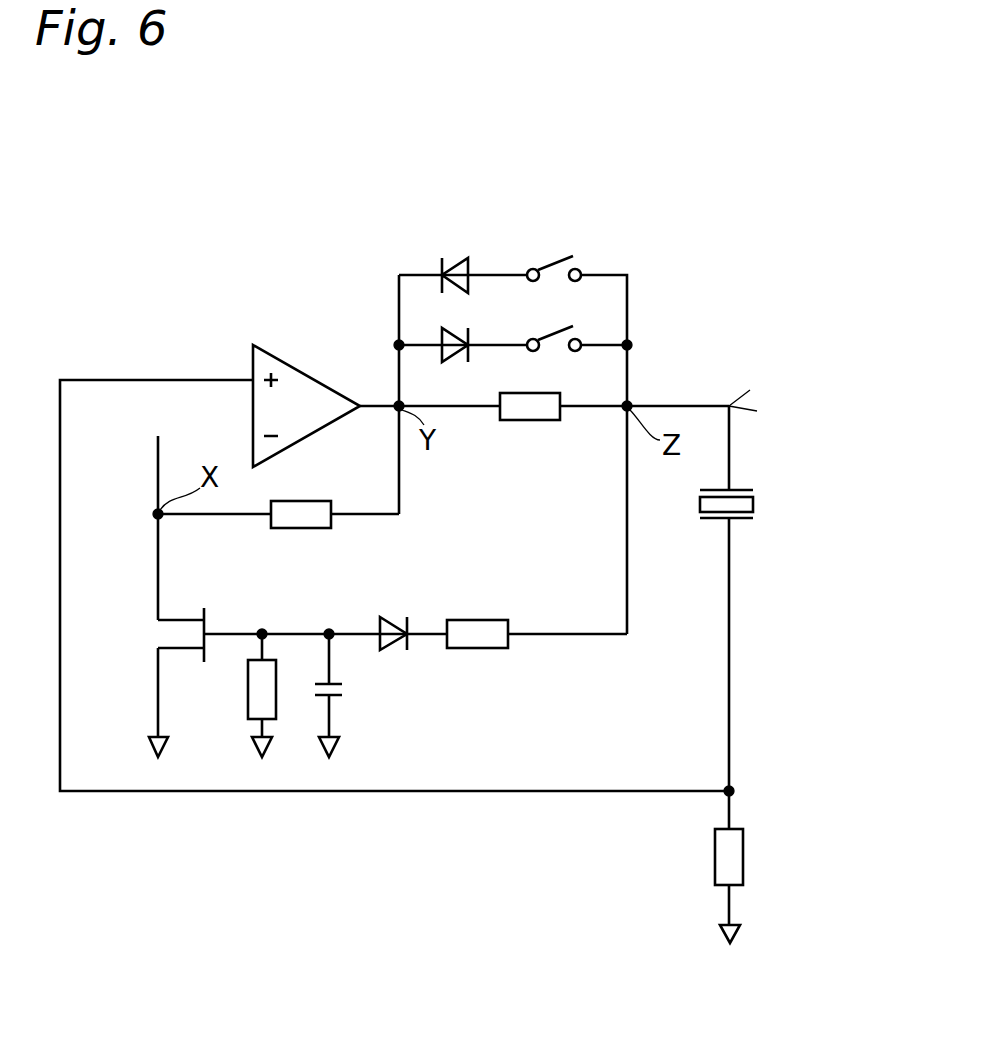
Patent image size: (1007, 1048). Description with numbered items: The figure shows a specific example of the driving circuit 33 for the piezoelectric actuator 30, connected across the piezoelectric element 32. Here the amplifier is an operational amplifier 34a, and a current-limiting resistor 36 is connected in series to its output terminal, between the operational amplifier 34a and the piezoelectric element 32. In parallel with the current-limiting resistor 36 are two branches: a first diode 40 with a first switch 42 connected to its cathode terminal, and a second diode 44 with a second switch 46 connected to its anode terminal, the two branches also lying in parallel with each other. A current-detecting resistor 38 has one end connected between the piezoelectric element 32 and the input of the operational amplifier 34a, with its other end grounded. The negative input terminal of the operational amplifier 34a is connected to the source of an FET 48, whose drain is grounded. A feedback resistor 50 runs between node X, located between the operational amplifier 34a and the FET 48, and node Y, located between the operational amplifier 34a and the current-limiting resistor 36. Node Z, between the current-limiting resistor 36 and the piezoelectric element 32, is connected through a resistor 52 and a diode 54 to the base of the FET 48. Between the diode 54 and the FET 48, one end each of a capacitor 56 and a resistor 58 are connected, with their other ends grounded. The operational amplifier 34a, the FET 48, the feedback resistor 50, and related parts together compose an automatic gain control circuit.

The piezoelectric actuator 30 is at (762, 212).
The operational amplifier 34a is at (270, 350).
The first diode 40 is at (440, 335).
The second diode 44 is at (455, 255).
The first switch 42 is at (553, 330).
The second switch 46 is at (556, 255).
The current-limiting resistor 36 is at (533, 420).
The driving circuit 33 is at (752, 398).
The piezoelectric element 32 is at (753, 503).
The current-detecting resistor 38 is at (743, 855).
The feedback resistor 50 is at (327, 528).
The FET 48 is at (207, 613).
The resistor 58 is at (248, 688).
The capacitor 56 is at (342, 690).
The diode 54 is at (392, 650).
The resistor 52 is at (477, 648).